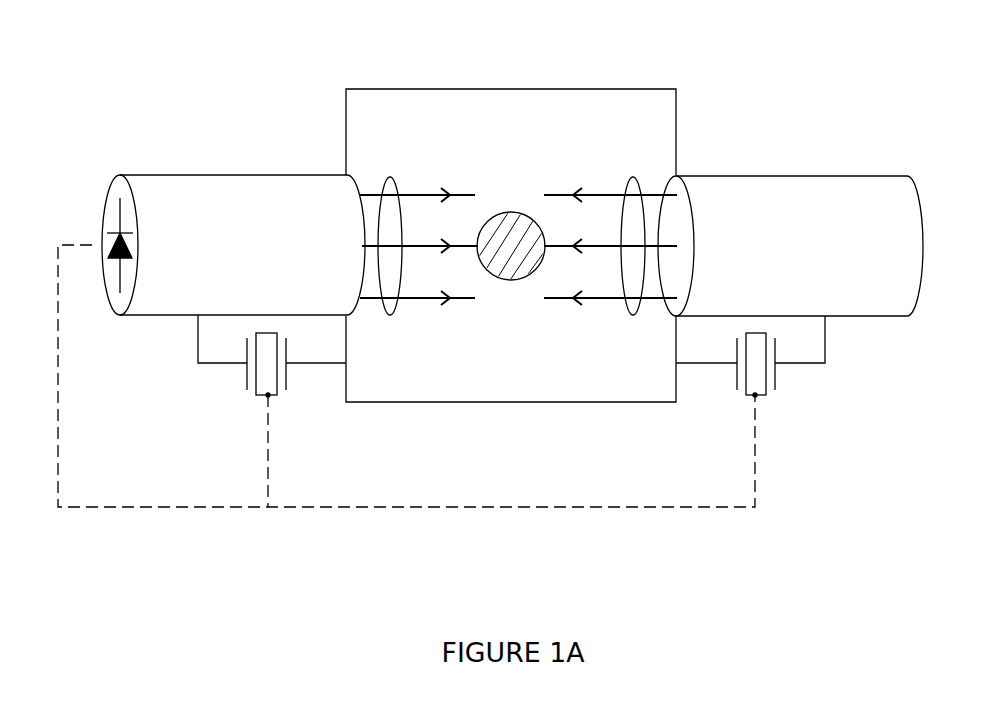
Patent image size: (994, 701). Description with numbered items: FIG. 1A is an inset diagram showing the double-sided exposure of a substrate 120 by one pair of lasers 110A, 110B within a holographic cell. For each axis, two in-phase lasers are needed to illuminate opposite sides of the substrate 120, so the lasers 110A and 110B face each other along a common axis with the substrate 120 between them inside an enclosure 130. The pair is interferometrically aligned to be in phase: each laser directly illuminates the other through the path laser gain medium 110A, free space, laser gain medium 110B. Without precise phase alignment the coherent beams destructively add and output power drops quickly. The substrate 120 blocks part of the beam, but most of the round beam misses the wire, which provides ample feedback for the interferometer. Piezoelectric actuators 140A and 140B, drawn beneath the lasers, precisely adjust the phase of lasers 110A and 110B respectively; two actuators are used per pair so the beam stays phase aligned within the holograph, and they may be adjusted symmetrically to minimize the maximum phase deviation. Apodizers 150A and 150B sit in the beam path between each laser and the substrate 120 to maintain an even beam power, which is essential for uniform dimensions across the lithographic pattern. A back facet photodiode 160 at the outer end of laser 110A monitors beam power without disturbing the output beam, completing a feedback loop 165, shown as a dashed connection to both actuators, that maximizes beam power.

The laser 110A is at (221, 258).
The laser 110B is at (784, 258).
The substrate 120 is at (493, 256).
The housing / enclosure 130 is at (604, 90).
The piezoelectric actuator 140A is at (259, 397).
The piezoelectric actuator 140B is at (745, 397).
The apodizer 150A is at (390, 177).
The apodizer 150B is at (633, 316).
The back facet photodiode 160 is at (105, 240).
The feedback loop 165 is at (727, 510).